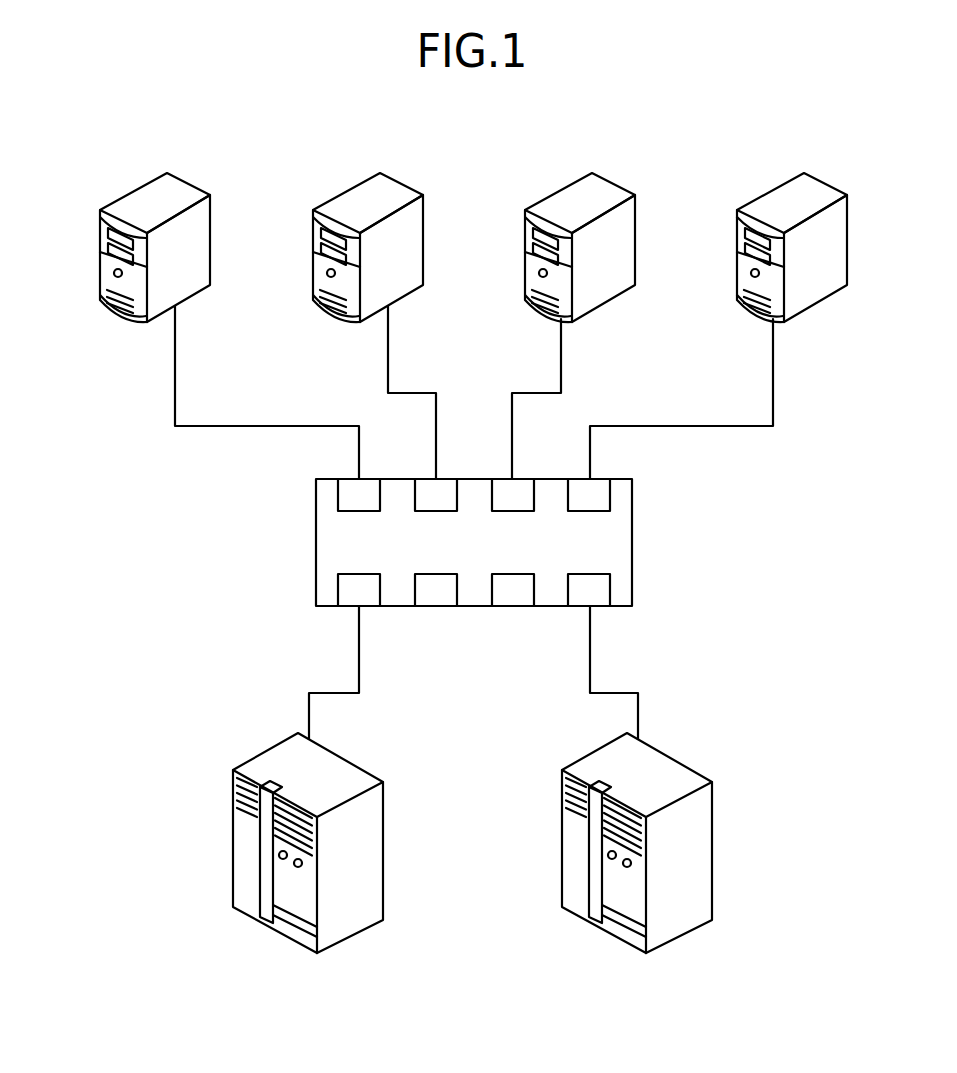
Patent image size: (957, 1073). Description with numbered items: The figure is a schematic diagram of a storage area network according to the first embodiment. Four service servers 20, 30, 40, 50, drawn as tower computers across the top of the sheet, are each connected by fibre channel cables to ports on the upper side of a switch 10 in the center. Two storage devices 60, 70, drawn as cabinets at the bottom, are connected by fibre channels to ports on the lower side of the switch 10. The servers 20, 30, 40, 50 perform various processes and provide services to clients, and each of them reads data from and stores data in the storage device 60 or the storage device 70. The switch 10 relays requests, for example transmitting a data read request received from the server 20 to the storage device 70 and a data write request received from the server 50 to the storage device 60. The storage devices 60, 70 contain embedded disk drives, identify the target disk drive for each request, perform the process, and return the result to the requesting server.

The switch 10 is at (632, 544).
The server 20 is at (132, 192).
The server 30 is at (344, 192).
The server 40 is at (557, 192).
The server 50 is at (768, 192).
The storage device 60 is at (278, 935).
The storage device 70 is at (607, 935).